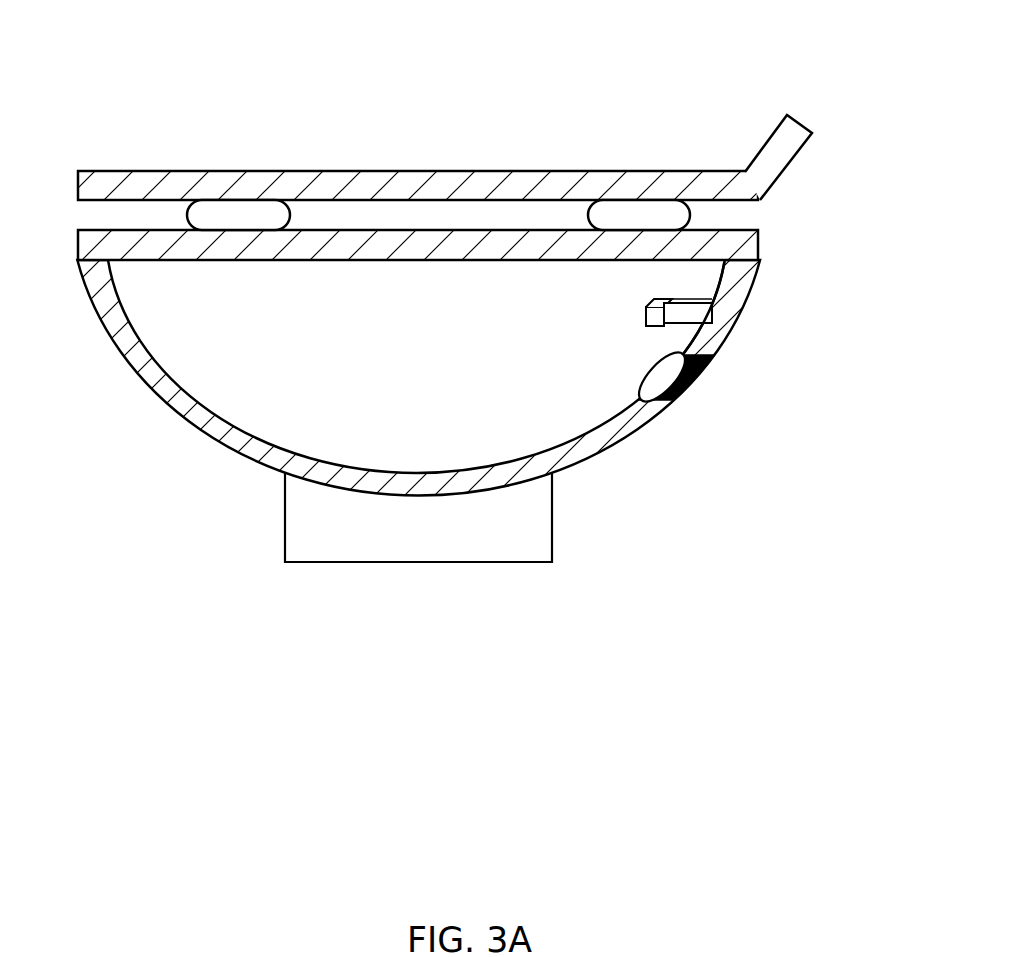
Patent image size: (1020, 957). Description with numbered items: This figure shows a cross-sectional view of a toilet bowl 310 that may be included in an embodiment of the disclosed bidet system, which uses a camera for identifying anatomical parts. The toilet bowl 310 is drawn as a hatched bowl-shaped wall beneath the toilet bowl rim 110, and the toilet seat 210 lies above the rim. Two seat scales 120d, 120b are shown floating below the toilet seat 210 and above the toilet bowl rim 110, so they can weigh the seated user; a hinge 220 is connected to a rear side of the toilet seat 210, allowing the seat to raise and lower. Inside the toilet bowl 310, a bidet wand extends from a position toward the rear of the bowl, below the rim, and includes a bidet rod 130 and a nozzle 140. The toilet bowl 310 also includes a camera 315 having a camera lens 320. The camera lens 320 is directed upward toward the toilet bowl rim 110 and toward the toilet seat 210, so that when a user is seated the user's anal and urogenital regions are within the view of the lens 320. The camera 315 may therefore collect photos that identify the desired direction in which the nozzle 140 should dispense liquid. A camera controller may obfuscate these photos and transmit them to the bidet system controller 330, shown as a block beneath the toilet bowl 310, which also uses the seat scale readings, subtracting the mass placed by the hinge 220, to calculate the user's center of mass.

The toilet bowl rim 110 is at (392, 243).
The seat scale 120d is at (232, 213).
The seat scale 120b is at (650, 217).
The toilet seat 210 is at (528, 190).
The hinge 220 is at (768, 137).
The bidet rod 130 is at (682, 322).
The nozzle 140 is at (646, 309).
The toilet bowl 310 is at (190, 412).
The camera 315 is at (697, 387).
The camera lens 320 is at (658, 383).
The bidet system controller 330 is at (443, 544).